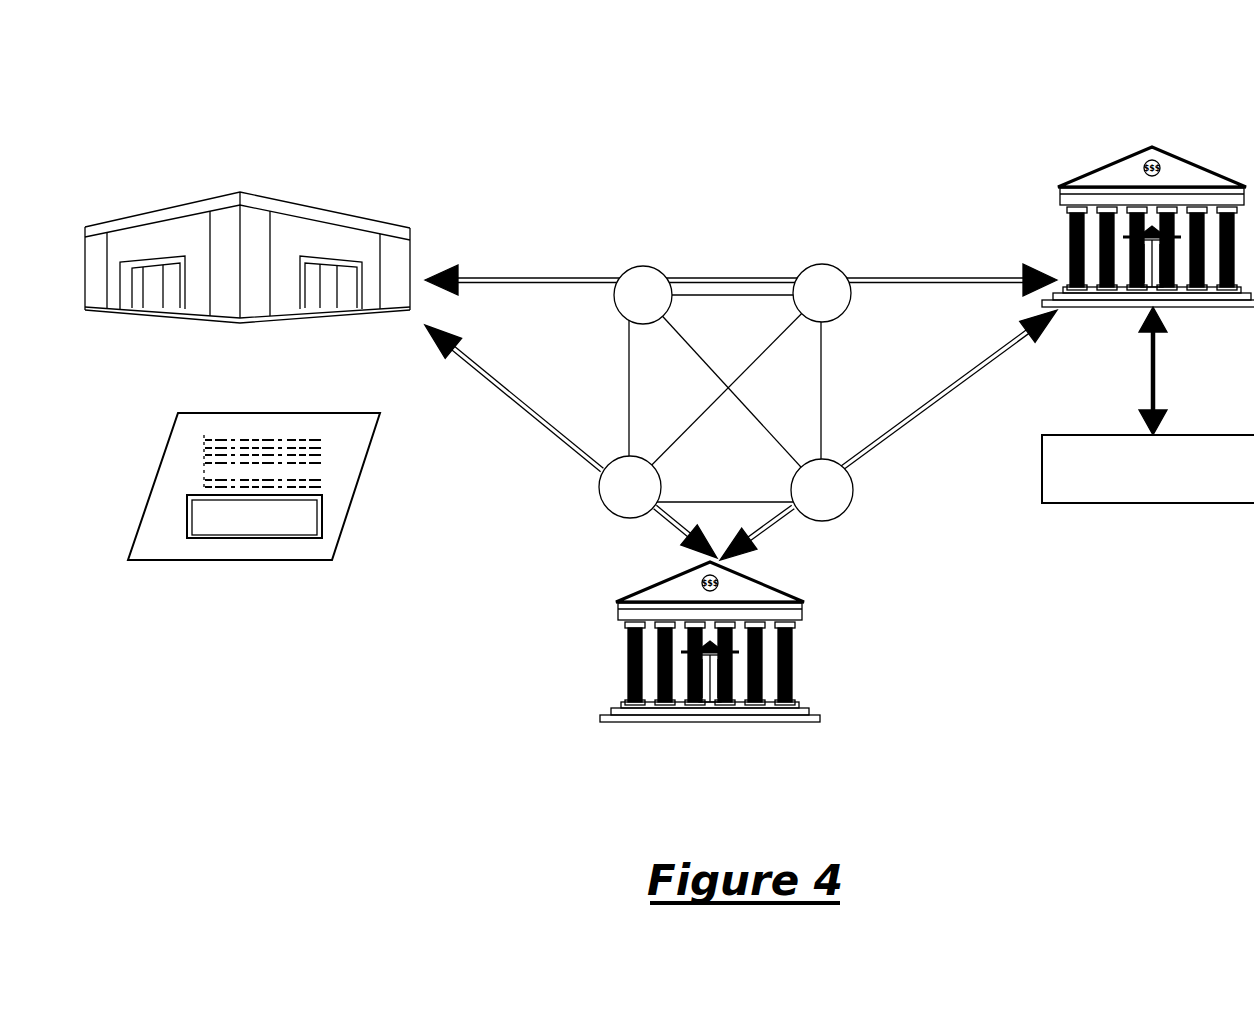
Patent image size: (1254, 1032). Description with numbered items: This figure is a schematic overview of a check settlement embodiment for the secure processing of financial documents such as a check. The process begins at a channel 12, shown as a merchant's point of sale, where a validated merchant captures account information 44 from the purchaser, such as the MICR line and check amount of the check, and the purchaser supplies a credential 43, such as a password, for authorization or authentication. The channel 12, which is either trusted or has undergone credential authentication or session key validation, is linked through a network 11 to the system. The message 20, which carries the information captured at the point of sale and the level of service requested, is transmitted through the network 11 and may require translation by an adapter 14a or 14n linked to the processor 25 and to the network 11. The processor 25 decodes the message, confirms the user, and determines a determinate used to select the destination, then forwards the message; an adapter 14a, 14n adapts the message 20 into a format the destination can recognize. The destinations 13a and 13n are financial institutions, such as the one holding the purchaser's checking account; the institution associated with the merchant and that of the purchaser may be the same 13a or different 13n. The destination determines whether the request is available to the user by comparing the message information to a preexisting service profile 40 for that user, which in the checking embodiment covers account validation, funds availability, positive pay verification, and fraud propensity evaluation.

The network 11 is at (718, 162).
The channel 12 is at (217, 190).
The destination 13a is at (1152, 133).
The destination 13n is at (793, 683).
The adapter 14a is at (628, 270).
The adapter 14n is at (838, 278).
The message 20 is at (143, 517).
The processor 25 is at (748, 323).
The service profile 40 is at (1153, 505).
The credential 43 is at (263, 533).
The account information 44 is at (322, 472).